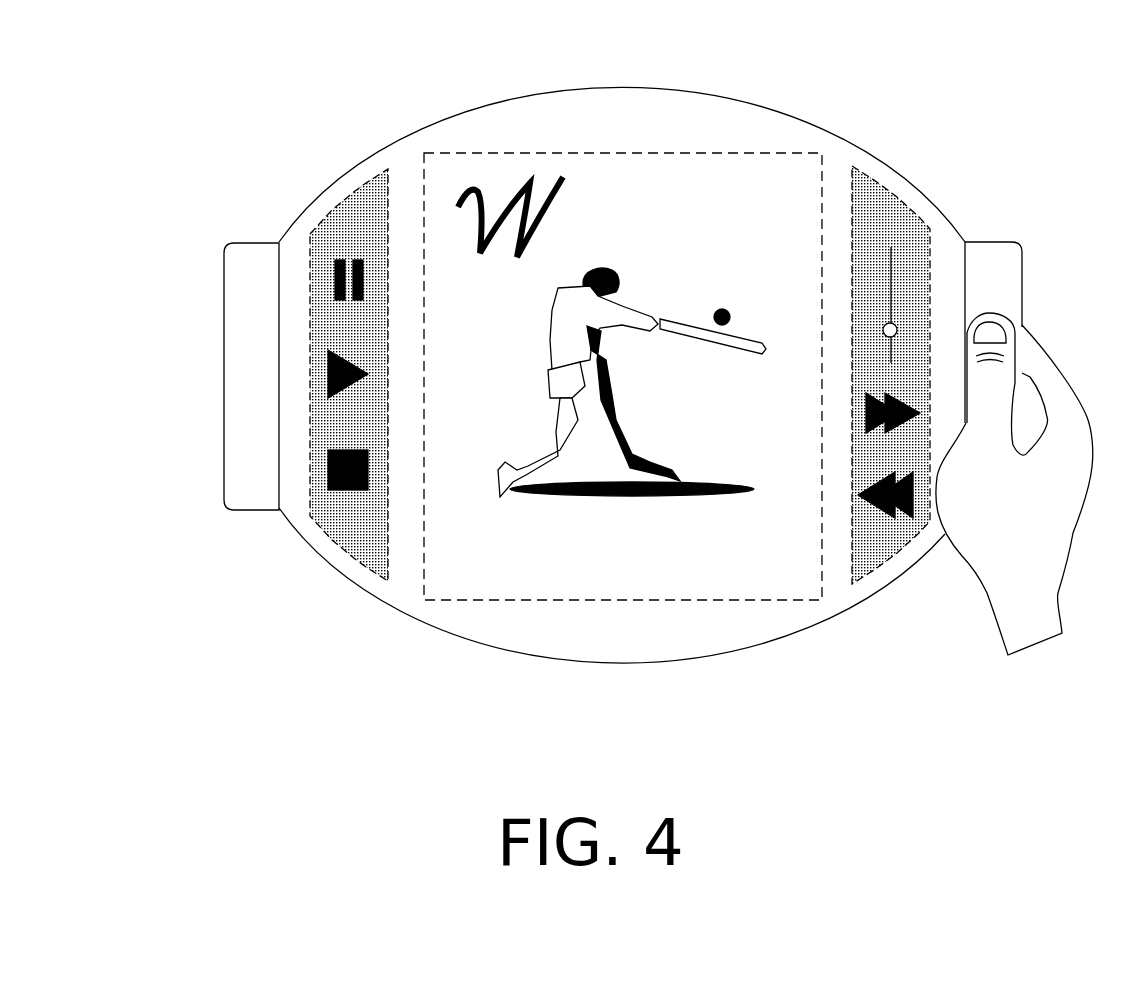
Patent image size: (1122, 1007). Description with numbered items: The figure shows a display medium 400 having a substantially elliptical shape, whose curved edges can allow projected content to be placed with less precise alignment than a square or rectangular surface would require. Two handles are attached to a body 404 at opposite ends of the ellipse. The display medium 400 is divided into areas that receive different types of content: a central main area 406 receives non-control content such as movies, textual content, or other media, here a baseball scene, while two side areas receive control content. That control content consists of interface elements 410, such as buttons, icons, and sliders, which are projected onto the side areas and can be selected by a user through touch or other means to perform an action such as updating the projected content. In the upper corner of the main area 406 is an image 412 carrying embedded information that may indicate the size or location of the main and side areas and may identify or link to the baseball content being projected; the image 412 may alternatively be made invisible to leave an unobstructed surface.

The display medium 400 is at (935, 62).
The body 404 is at (537, 132).
The main area 406 is at (710, 183).
The interface elements 410 is at (377, 302).
The image 412 is at (567, 217).